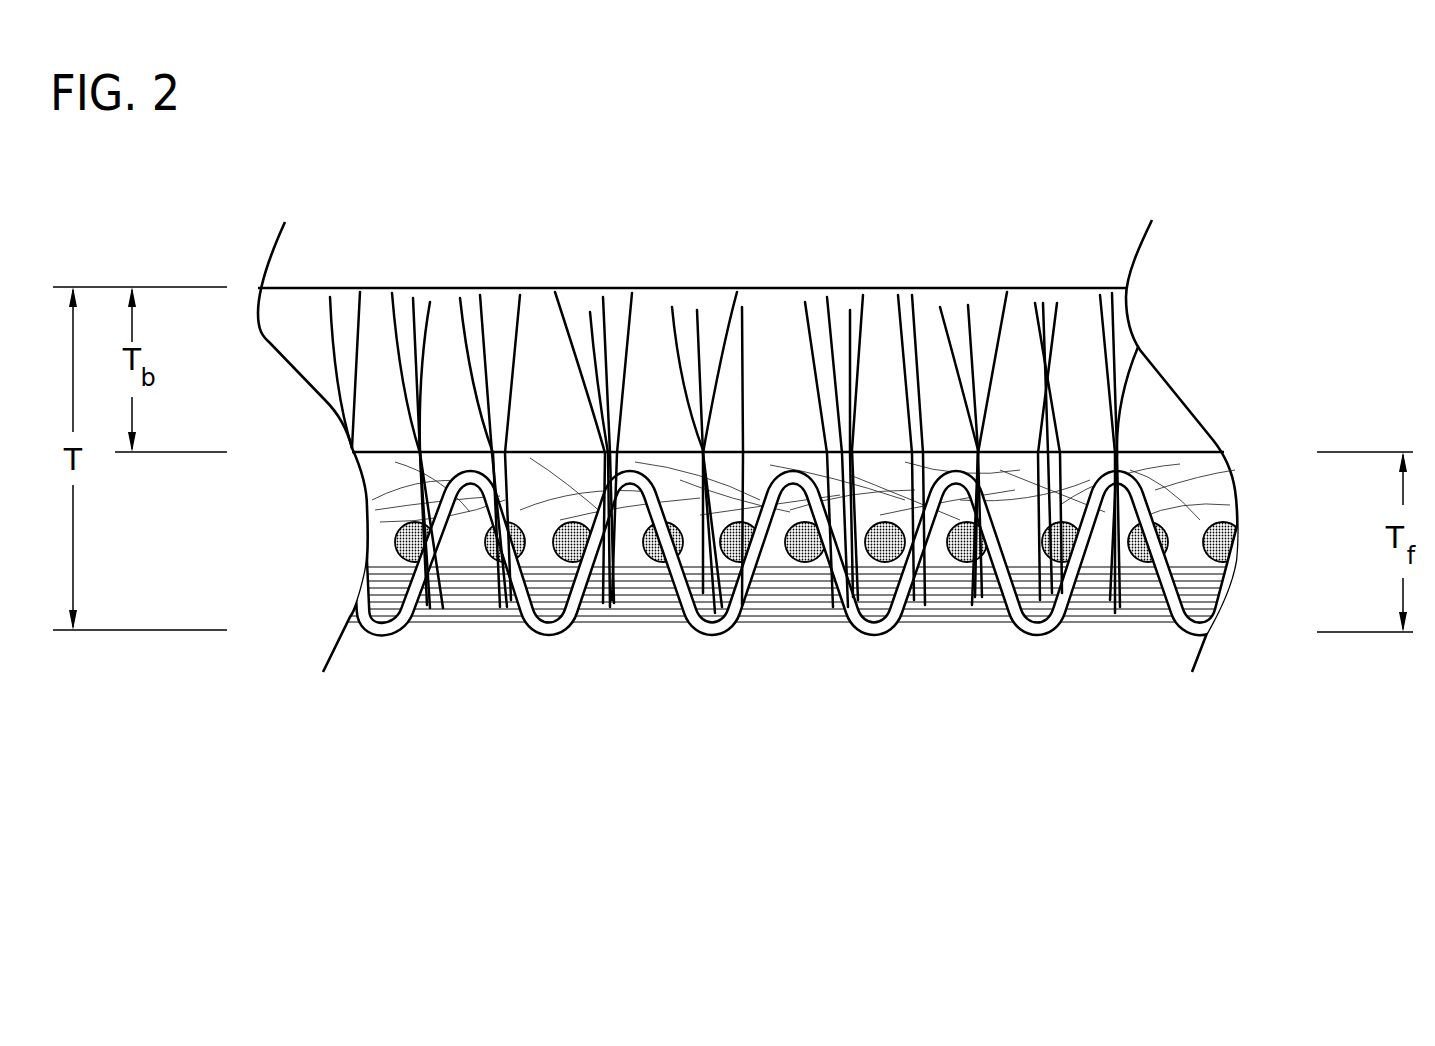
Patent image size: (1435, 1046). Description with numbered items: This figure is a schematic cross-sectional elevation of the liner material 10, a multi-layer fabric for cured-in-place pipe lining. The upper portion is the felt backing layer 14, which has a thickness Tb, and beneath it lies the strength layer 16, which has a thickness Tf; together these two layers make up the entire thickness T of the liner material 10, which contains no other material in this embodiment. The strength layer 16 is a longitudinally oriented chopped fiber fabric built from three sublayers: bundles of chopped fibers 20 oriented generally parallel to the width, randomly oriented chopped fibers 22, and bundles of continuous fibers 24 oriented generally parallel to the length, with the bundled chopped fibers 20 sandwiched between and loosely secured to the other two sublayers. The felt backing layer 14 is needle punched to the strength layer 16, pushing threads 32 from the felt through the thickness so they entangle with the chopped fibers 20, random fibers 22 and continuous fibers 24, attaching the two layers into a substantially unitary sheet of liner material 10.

The liner material 10 is at (547, 738).
The felt backing layer 14 is at (1252, 287).
The strength layer 16 is at (784, 594).
The chopped fibers 20 is at (641, 556).
The chopped fibers 22 is at (1192, 475).
The continuous fibers 24 is at (799, 594).
The threads 32 is at (685, 355).